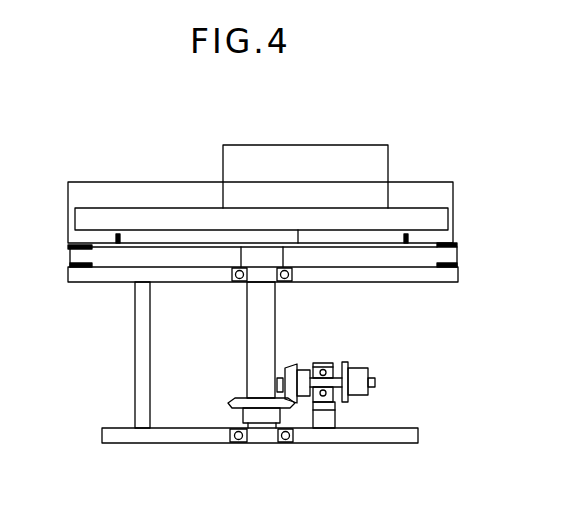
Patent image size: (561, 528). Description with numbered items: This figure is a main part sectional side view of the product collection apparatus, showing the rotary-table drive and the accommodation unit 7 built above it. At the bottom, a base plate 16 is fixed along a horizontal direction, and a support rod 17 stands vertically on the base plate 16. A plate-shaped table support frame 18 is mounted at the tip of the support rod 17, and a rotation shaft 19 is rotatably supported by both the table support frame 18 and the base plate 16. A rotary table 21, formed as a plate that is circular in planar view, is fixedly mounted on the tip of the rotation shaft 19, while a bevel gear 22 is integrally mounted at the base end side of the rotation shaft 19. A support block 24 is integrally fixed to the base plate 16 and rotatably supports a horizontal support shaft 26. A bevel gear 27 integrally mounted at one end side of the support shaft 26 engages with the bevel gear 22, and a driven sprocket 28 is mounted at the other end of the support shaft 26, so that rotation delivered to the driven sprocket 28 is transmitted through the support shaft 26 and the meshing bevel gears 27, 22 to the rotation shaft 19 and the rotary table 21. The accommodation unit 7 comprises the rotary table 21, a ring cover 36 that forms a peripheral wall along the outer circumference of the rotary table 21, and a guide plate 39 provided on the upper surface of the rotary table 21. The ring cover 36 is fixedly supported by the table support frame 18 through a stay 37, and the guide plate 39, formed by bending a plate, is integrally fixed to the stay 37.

The accommodation unit 7 is at (406, 166).
The base plate 16 is at (167, 443).
The support rod 17 is at (137, 373).
The table support frame 18 is at (420, 273).
The rotation shaft 19 is at (258, 321).
The rotary table 21 is at (160, 218).
The bevel gear 22 is at (230, 401).
The support block 24 is at (323, 418).
The support shaft 26 is at (330, 362).
The bevel gear 27 is at (305, 366).
The driven sprocket 28 is at (345, 368).
The ring cover 36 is at (105, 181).
The stay 37 is at (66, 250).
The guide plate 39 is at (315, 158).